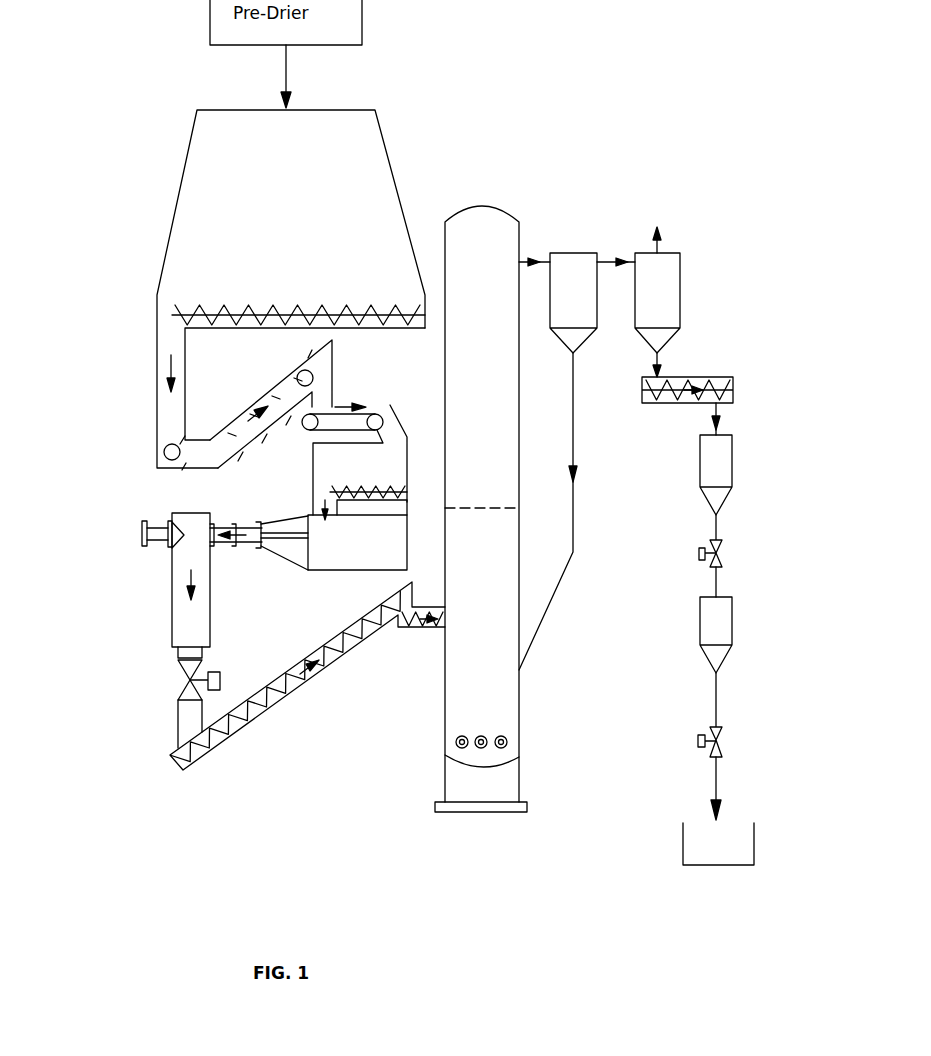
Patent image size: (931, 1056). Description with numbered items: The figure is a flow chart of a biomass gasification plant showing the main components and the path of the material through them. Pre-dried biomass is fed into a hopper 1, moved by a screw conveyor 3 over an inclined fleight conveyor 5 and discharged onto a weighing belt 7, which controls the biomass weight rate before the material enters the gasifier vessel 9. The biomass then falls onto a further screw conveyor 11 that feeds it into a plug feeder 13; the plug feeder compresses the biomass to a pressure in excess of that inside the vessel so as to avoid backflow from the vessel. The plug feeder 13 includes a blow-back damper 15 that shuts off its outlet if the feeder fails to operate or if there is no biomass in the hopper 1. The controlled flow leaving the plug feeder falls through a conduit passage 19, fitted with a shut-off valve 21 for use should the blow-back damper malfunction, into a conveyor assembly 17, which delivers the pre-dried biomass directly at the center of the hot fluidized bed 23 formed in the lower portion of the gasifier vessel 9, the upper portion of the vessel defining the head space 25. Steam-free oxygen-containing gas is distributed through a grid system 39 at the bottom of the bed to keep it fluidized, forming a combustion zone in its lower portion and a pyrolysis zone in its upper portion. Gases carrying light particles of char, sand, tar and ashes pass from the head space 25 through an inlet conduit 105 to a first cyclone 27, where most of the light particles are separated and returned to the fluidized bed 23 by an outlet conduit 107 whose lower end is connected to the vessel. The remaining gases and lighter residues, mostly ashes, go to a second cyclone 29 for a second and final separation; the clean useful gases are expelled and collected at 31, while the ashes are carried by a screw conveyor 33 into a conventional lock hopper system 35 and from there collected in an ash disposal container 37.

The hopper 1 is at (291, 289).
The screw conveyor 3 is at (344, 322).
The inclined fleight conveyor 5 is at (258, 404).
The weighing belt 7 is at (308, 434).
The gasifier vessel 9 is at (520, 448).
The screw conveyor 11 is at (364, 486).
The plug feeder 13 is at (285, 556).
The blow-back damper 15 is at (182, 522).
The conveyor assembly 17 is at (407, 632).
The conduit passage 19 is at (212, 612).
The shut-off valve 21 is at (203, 678).
The hot fluidized bed 23 is at (482, 557).
The head space 25 is at (465, 370).
The first cyclone 27 is at (592, 303).
The second cyclone 29 is at (657, 315).
The clean gas collection point 31 is at (659, 228).
The screw conveyor 33 is at (650, 403).
The lock hopper system 35 is at (668, 580).
The ash disposal container 37 is at (740, 846).
The grid system 39 is at (507, 742).
The inlet conduit 105 is at (532, 262).
The outlet conduit 107 is at (576, 552).